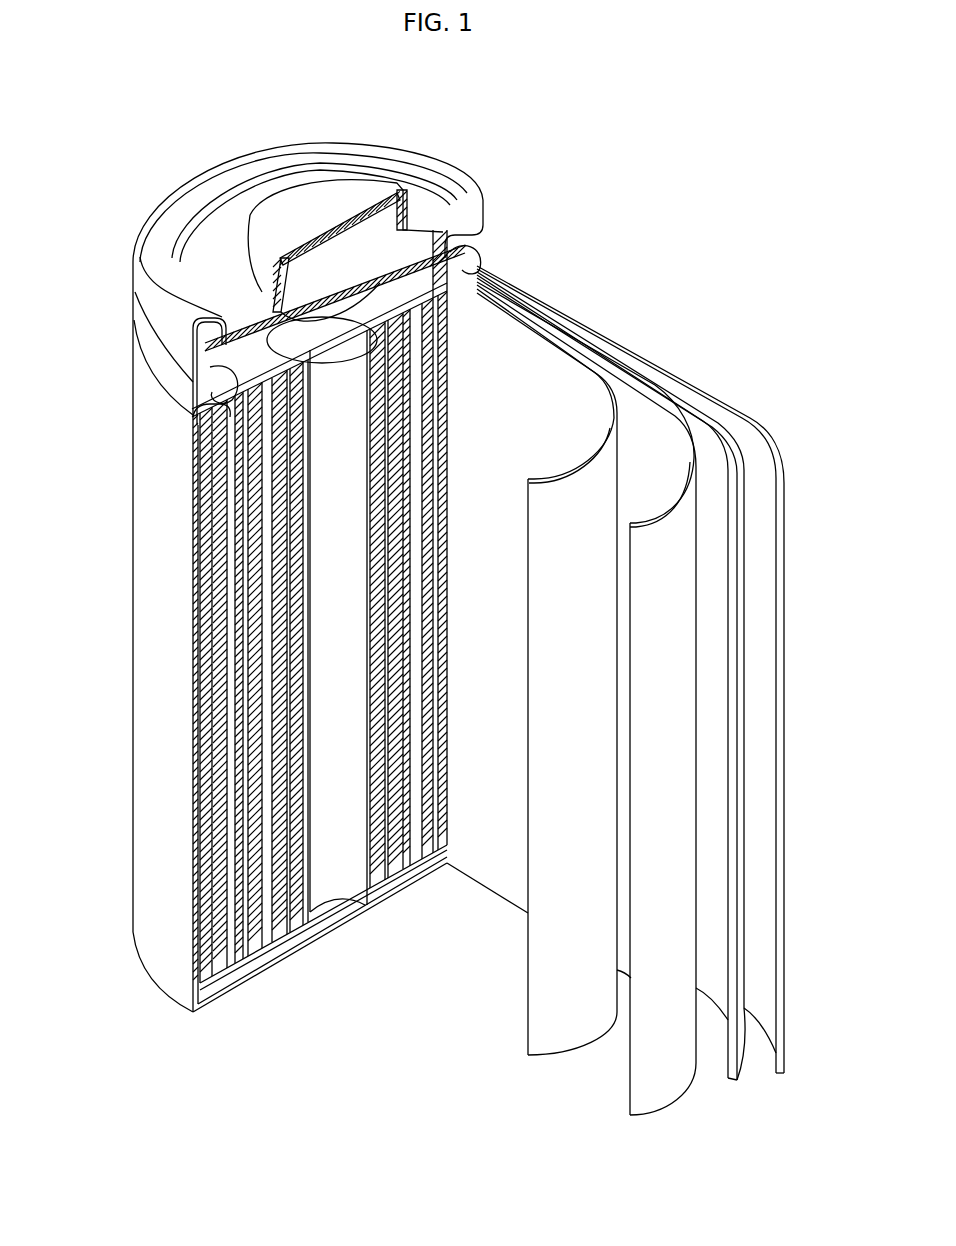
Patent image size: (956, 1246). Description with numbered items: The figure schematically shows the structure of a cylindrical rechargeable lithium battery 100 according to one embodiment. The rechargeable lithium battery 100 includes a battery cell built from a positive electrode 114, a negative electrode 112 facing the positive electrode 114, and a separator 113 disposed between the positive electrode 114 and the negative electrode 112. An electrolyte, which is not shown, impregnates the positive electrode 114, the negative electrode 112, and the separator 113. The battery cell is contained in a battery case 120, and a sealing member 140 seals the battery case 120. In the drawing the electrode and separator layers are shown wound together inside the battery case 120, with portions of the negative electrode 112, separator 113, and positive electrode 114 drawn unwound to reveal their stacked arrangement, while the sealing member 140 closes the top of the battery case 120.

The rechargeable lithium battery 100 is at (481, 130).
The negative electrode 112 is at (748, 427).
The separator 113 is at (502, 337).
The positive electrode 114 is at (632, 397).
The battery case 120 is at (136, 629).
The sealing member 140 is at (294, 193).